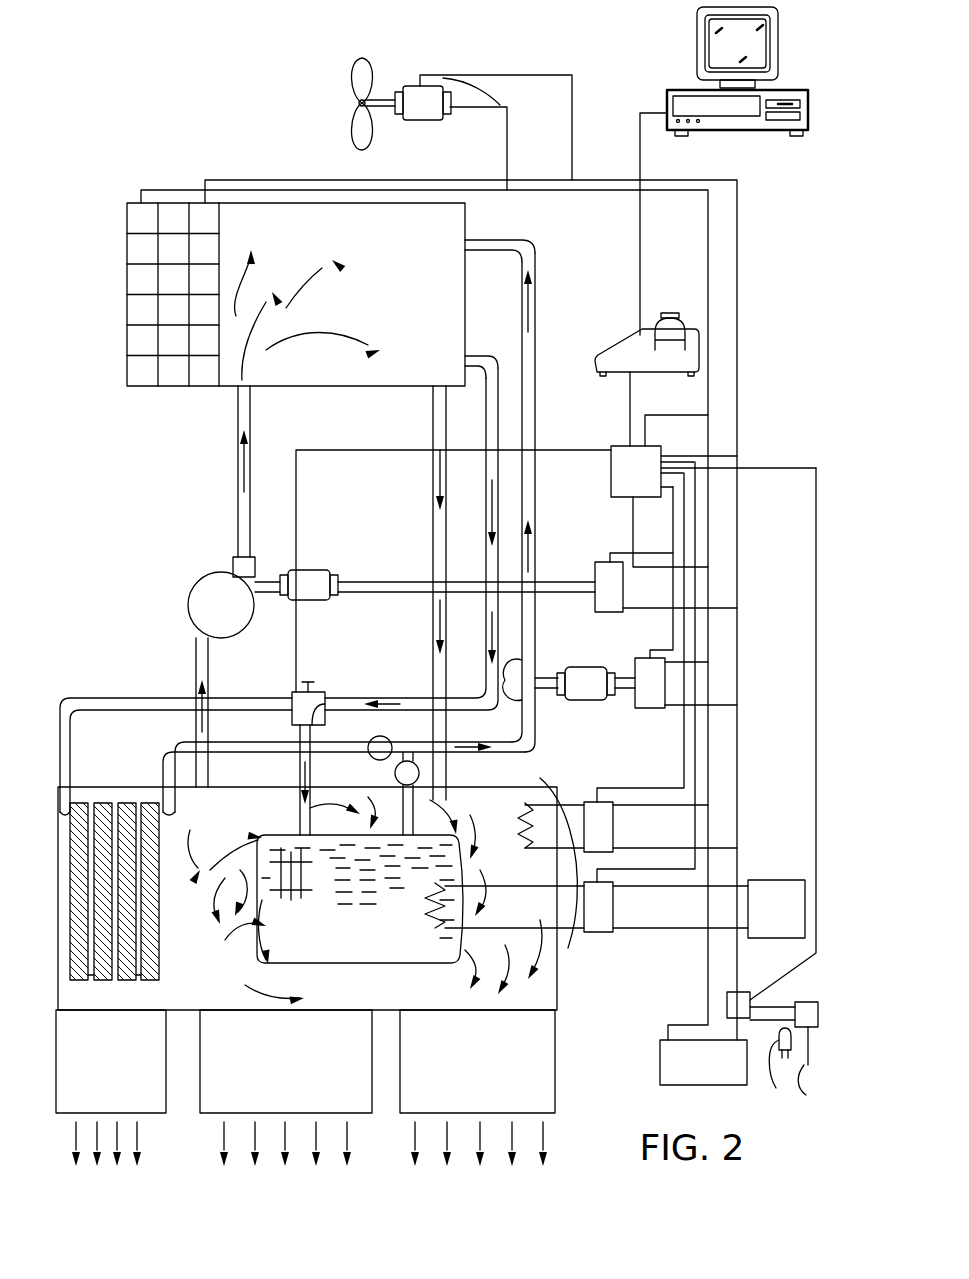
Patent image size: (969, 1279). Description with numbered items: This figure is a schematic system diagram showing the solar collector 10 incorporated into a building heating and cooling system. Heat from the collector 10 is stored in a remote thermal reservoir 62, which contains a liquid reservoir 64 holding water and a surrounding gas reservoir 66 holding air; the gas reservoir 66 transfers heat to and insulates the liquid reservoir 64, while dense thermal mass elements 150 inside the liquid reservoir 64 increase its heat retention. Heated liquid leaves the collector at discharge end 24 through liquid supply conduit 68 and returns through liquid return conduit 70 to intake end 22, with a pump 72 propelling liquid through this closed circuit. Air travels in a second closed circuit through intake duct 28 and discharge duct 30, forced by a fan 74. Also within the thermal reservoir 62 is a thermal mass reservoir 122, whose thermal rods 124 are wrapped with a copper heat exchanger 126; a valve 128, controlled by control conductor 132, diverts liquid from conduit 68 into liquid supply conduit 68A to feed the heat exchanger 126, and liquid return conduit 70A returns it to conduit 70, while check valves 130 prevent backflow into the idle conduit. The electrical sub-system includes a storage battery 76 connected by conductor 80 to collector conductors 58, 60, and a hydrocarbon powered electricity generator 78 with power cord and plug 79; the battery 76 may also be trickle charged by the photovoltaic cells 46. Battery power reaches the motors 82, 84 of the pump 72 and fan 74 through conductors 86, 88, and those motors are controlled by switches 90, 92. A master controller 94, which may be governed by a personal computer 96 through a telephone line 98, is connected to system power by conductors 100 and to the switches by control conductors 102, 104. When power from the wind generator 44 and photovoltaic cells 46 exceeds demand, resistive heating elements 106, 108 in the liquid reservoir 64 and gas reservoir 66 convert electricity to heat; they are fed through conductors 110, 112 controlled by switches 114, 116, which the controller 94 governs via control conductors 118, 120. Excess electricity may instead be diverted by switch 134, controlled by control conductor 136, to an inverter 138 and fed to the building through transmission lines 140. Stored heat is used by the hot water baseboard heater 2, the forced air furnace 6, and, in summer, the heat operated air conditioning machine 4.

The hot water baseboard heater 2 is at (355, 1106).
The heat operated air conditioning machine 4 is at (556, 1065).
The forced air furnace 6 is at (137, 1100).
The solar collector 10 is at (212, 122).
The intake end 22 is at (480, 250).
The discharge end 24 is at (488, 362).
The intake duct 28 is at (237, 476).
The discharge duct 30 is at (433, 416).
The wind generator 44 is at (388, 56).
The photovoltaic cells 46 is at (110, 184).
The conductor 58 is at (262, 180).
The conductor 60 is at (496, 98).
The thermal reservoir 62 is at (114, 718).
The liquid reservoir 64 is at (350, 895).
The gas reservoir 66 is at (205, 927).
The liquid supply conduit 68 is at (486, 516).
The liquid supply conduit 68A is at (112, 698).
The liquid return conduit 70 is at (535, 412).
The liquid return conduit 70A is at (154, 770).
The pump 72 is at (522, 692).
The fan 74 is at (206, 600).
The storage battery 76 is at (665, 1046).
The hydrocarbon powered electricity generator 78 is at (776, 880).
The power cord and plug 79 is at (782, 1068).
The conductor 80 is at (737, 322).
The motor 82 is at (576, 700).
The motor 84 is at (300, 602).
The conductor 86 is at (624, 672).
The conductor 88 is at (412, 580).
The switch 90 is at (651, 708).
The switch 92 is at (596, 598).
The master controller 94 is at (612, 470).
The personal computer 96 is at (684, 46).
The telephone line 98 is at (627, 336).
The conductors 100 is at (647, 430).
The control conductor 102 is at (673, 553).
The control conductor 104 is at (633, 522).
The resistive heating element 106 is at (442, 906).
The resistive heating element 108 is at (518, 812).
The conductor 110 is at (658, 890).
The conductor 112 is at (544, 853).
The switch 114 is at (597, 932).
The switch 116 is at (614, 826).
The control conductor 118 is at (698, 777).
The control conductor 120 is at (690, 748).
The thermal mass reservoir 122 is at (90, 856).
The thermal rods 124 is at (78, 824).
The heat exchanger 126 is at (80, 846).
The valve 128 is at (292, 696).
The check valves 130 is at (396, 779).
The control conductor 132 is at (335, 449).
The switch 134 is at (740, 992).
The control conductor 136 is at (816, 576).
The inverter 138 is at (807, 1003).
The transmission lines 140 is at (816, 1081).
The thermal mass elements 150 is at (262, 878).